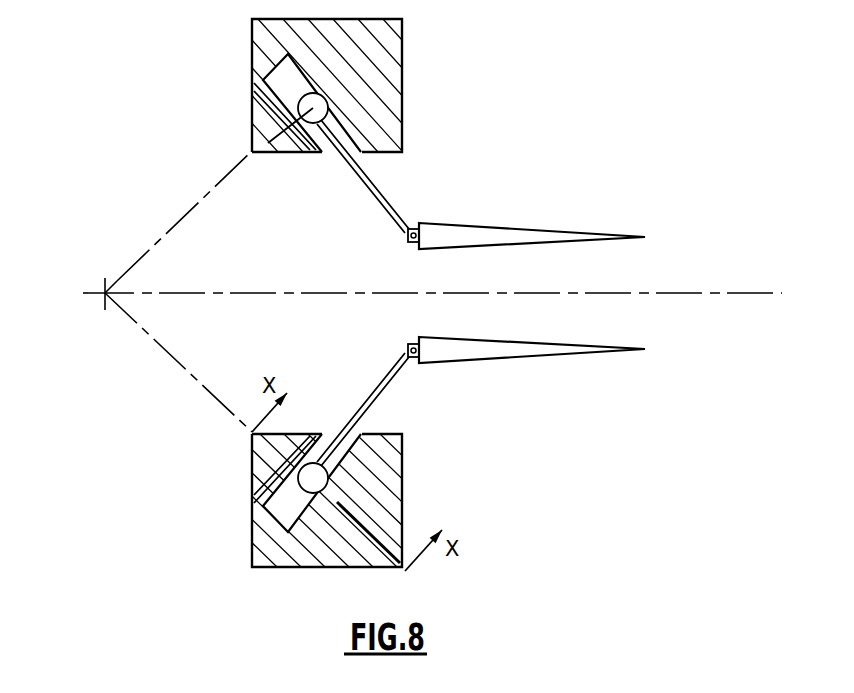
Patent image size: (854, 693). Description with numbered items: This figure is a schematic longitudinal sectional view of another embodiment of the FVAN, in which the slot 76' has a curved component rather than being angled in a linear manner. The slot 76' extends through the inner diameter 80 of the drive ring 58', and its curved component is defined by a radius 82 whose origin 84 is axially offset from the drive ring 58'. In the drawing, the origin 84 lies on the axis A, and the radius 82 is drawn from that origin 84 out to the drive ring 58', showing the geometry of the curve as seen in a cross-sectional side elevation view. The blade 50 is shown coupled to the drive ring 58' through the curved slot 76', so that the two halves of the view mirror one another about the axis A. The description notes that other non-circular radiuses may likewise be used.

The origin 84 is at (105, 293).
The radius 82 is at (195, 215).
The inner diameter 80 is at (297, 152).
The axis A is at (687, 294).
The blade 50 is at (473, 352).
The drive ring 58' is at (316, 498).
The slot 76' is at (355, 433).